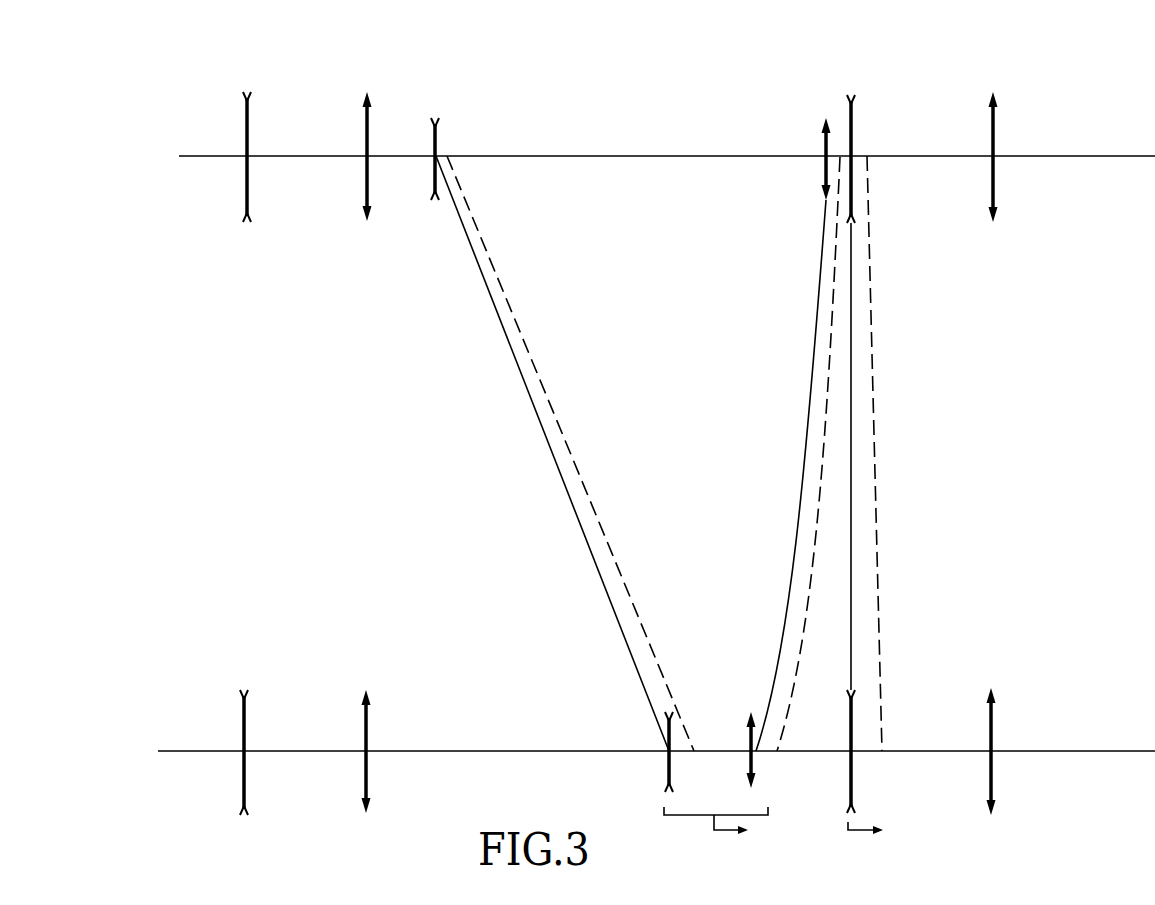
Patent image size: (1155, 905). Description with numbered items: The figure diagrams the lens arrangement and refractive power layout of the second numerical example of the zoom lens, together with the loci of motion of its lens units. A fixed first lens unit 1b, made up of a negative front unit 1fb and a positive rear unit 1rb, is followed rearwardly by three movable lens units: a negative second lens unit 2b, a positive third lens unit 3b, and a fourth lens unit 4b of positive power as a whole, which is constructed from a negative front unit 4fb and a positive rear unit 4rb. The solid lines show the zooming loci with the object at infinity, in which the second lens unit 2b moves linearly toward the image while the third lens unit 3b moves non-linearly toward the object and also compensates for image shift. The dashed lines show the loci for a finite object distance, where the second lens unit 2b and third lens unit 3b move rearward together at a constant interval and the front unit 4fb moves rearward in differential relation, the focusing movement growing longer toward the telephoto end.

The first lens unit 1b is at (228, 78).
The front unit 1fb is at (246, 97).
The rear unit 1rb is at (365, 97).
The second lens unit 2b is at (435, 118).
The third lens unit 3b is at (826, 118).
The fourth lens unit 4b is at (1050, 49).
The front unit 4fb is at (851, 96).
The rear unit 4rb is at (994, 93).